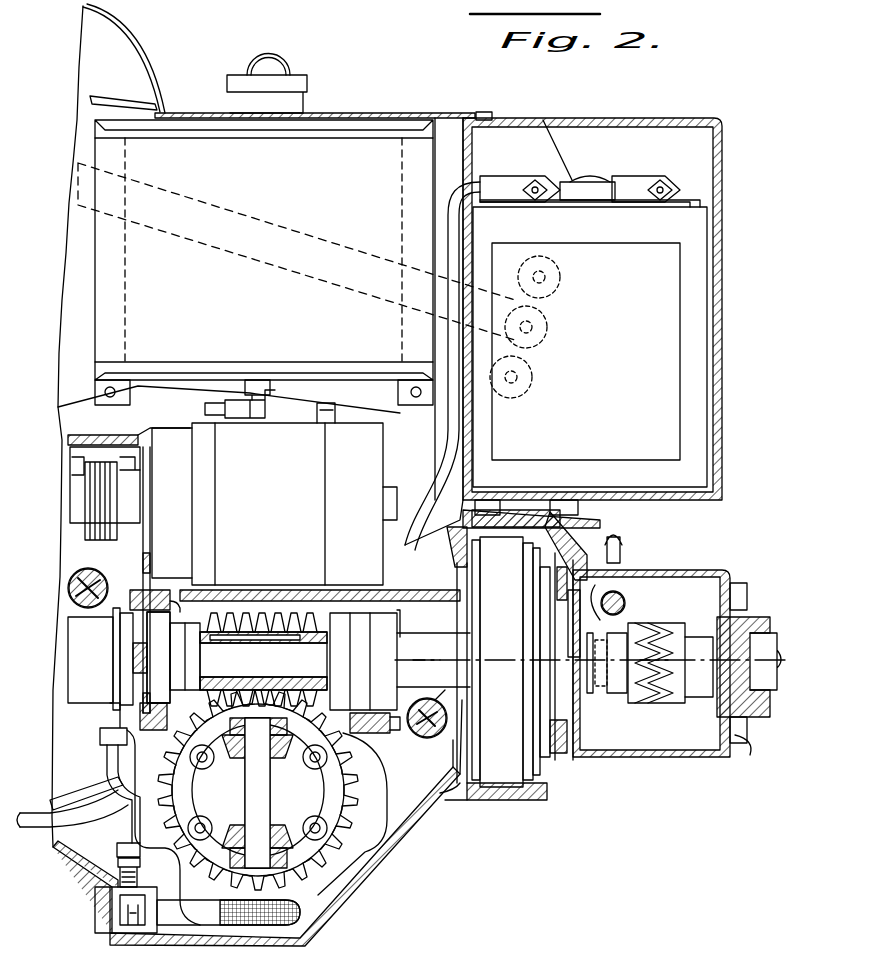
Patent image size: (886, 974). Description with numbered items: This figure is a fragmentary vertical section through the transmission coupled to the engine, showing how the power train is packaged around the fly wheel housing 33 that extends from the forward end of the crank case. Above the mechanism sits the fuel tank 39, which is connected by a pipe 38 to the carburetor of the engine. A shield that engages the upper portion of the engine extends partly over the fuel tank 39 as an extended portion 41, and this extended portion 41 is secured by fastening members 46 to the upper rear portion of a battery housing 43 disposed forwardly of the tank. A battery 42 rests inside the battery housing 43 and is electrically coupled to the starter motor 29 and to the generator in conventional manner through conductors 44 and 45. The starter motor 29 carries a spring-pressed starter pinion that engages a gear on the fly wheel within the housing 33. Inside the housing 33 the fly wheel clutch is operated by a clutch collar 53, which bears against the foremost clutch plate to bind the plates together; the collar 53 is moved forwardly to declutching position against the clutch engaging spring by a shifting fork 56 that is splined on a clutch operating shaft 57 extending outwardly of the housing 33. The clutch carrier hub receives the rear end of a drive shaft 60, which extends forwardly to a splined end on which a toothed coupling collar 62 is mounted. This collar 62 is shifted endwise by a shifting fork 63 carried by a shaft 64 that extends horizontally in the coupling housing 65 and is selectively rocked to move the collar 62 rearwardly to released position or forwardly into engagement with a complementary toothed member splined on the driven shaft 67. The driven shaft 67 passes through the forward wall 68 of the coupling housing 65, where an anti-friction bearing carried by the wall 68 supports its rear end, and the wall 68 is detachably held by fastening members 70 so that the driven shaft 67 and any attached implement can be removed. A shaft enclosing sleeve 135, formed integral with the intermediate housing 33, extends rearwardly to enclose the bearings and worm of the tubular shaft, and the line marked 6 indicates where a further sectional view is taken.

The section line 6- 6 is at (427, 645).
The starter motor 29 is at (350, 440).
The housing 33 is at (348, 885).
The pipe 38 is at (205, 403).
The fuel tank 39 is at (322, 145).
The extended portion of the shield 41 is at (197, 112).
The battery 42 is at (700, 256).
The battery housing 43 is at (722, 165).
The conductor 44 is at (500, 183).
The conductor 45 is at (626, 180).
The fastening members 46 is at (482, 110).
The clutch collar 53 is at (85, 672).
The shifting fork 56 is at (70, 585).
The clutch operating shaft 57 is at (100, 585).
The drive shaft 60 is at (270, 672).
The toothed coupling collar 62 is at (625, 690).
The shifting fork 63 is at (620, 598).
The shaft 64 is at (620, 613).
The coupling housing 65 is at (650, 760).
The driven shaft 67 is at (775, 655).
The forward wall 68 is at (735, 577).
The fastening members 70 is at (740, 745).
The shaft enclosing sleeve 135 is at (425, 738).